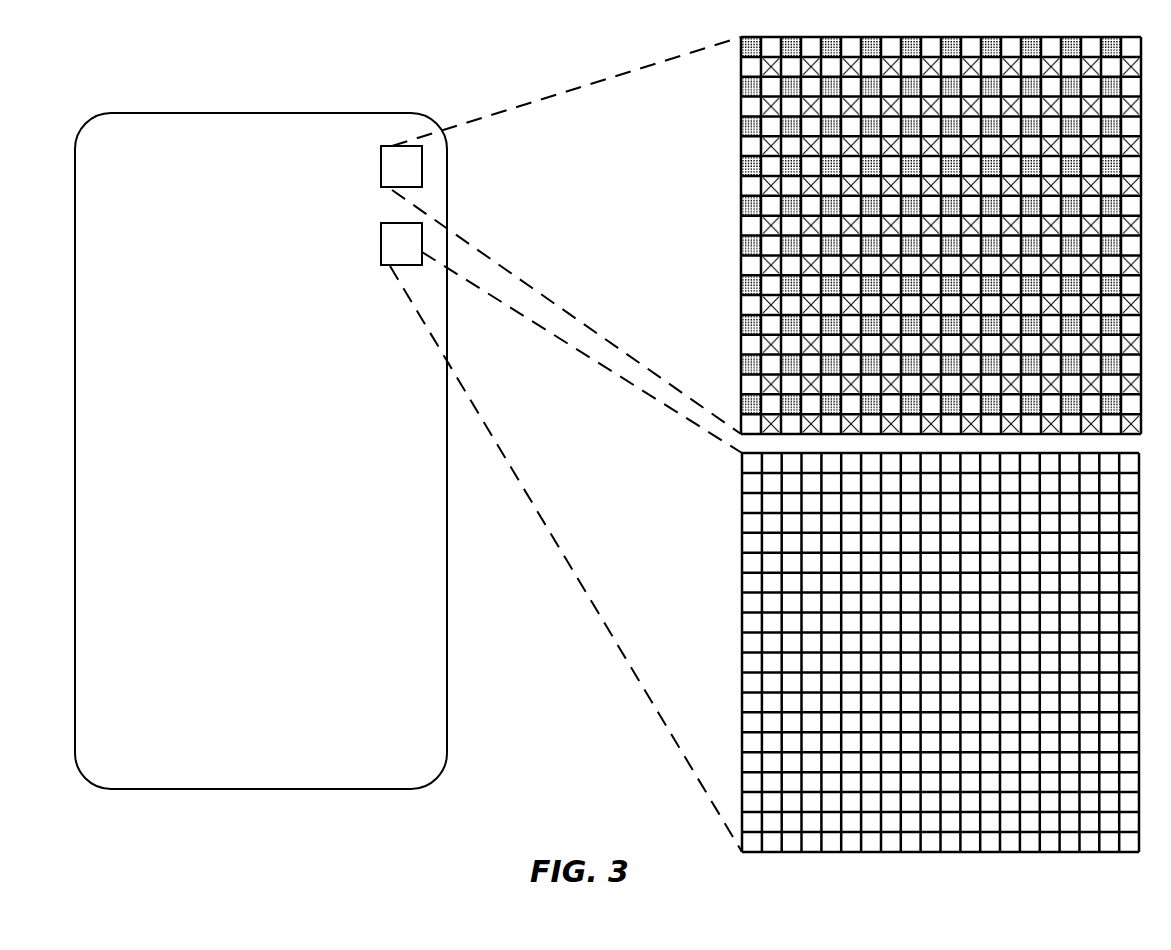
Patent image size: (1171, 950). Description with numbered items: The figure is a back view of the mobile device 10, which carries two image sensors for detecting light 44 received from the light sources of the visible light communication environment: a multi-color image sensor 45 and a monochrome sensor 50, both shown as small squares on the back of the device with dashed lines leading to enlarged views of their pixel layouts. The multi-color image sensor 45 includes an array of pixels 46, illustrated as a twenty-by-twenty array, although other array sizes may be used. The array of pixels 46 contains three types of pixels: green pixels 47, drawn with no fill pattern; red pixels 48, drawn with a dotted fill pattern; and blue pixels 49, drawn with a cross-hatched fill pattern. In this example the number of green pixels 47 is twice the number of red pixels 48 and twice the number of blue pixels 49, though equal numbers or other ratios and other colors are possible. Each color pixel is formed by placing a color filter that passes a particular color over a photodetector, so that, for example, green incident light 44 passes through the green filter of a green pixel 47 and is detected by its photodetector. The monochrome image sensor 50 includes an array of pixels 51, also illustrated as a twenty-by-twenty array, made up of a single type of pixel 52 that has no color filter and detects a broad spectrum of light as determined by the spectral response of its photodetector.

The mobile device 10 is at (330, 791).
The light 44 is at (360, 88).
The multi-color image sensor 45 is at (381, 158).
The array of pixels 46 is at (700, 177).
The green pixels 47 is at (750, 150).
The red pixels 48 is at (750, 243).
The blue pixels 49 is at (770, 307).
The monochrome sensor 50 is at (381, 241).
The array of pixels 51 is at (680, 524).
The pixel 52 is at (743, 645).